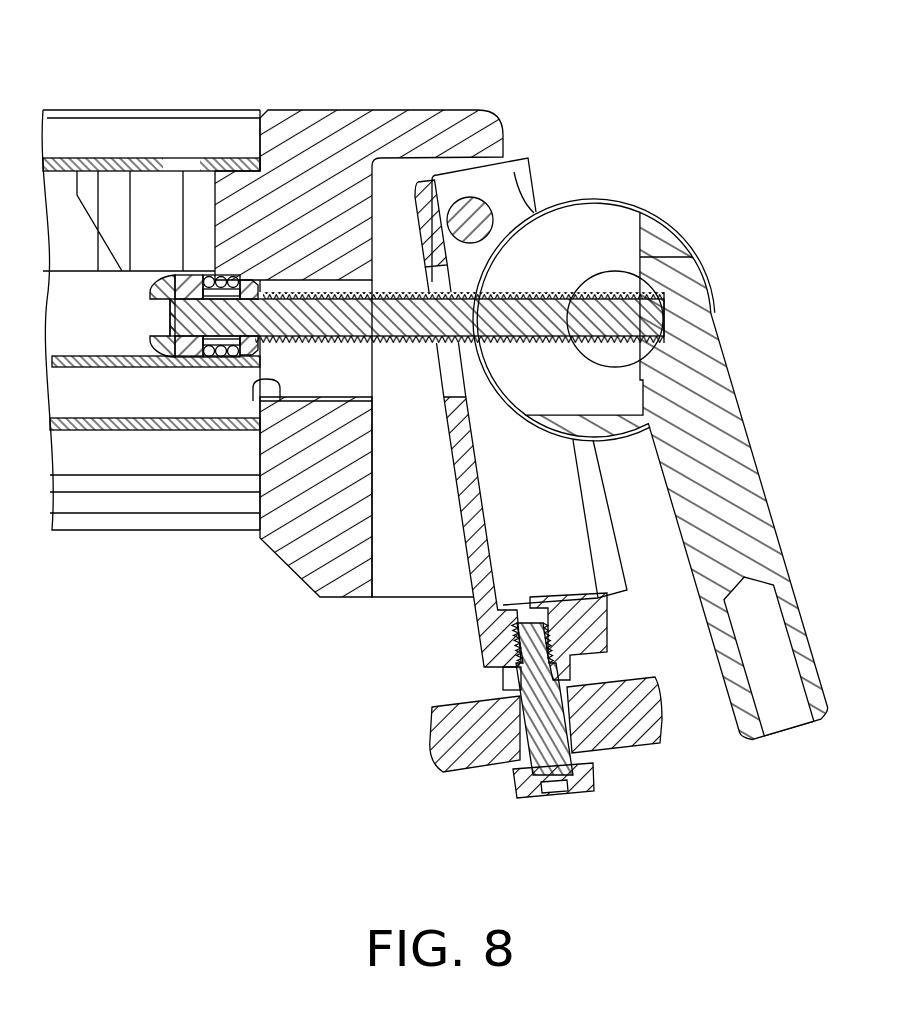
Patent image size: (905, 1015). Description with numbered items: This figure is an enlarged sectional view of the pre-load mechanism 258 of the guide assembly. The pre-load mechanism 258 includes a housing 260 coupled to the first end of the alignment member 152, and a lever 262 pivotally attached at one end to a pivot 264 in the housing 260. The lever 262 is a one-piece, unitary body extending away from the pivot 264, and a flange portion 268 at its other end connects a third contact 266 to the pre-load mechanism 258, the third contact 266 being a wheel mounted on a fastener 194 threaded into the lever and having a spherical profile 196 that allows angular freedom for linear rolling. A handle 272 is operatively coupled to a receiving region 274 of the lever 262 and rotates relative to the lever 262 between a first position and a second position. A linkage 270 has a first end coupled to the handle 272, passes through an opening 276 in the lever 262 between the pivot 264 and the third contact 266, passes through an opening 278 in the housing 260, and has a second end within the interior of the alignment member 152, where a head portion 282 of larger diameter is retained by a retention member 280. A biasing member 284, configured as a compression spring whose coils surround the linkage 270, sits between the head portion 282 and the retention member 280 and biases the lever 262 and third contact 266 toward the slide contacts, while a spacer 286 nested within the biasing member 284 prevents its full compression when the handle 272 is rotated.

The alignment member 152 is at (101, 104).
The housing 260 is at (316, 104).
The linkage 270 is at (313, 343).
The opening 278 is at (255, 392).
The head portion 282 is at (152, 346).
The retention member 280 is at (222, 352).
The spacer 286 is at (187, 353).
The biasing member 284 is at (210, 275).
The pre-load mechanism 258 is at (632, 93).
The handle 272 is at (760, 437).
The lever 262 is at (540, 175).
The receiving region 274 is at (514, 172).
The pivot 264 is at (470, 212).
The opening 276 is at (456, 392).
The flange portion 268 is at (607, 623).
The third contact 266 is at (652, 752).
The fastener 194 is at (588, 792).
The spherical profile 196 is at (432, 748).